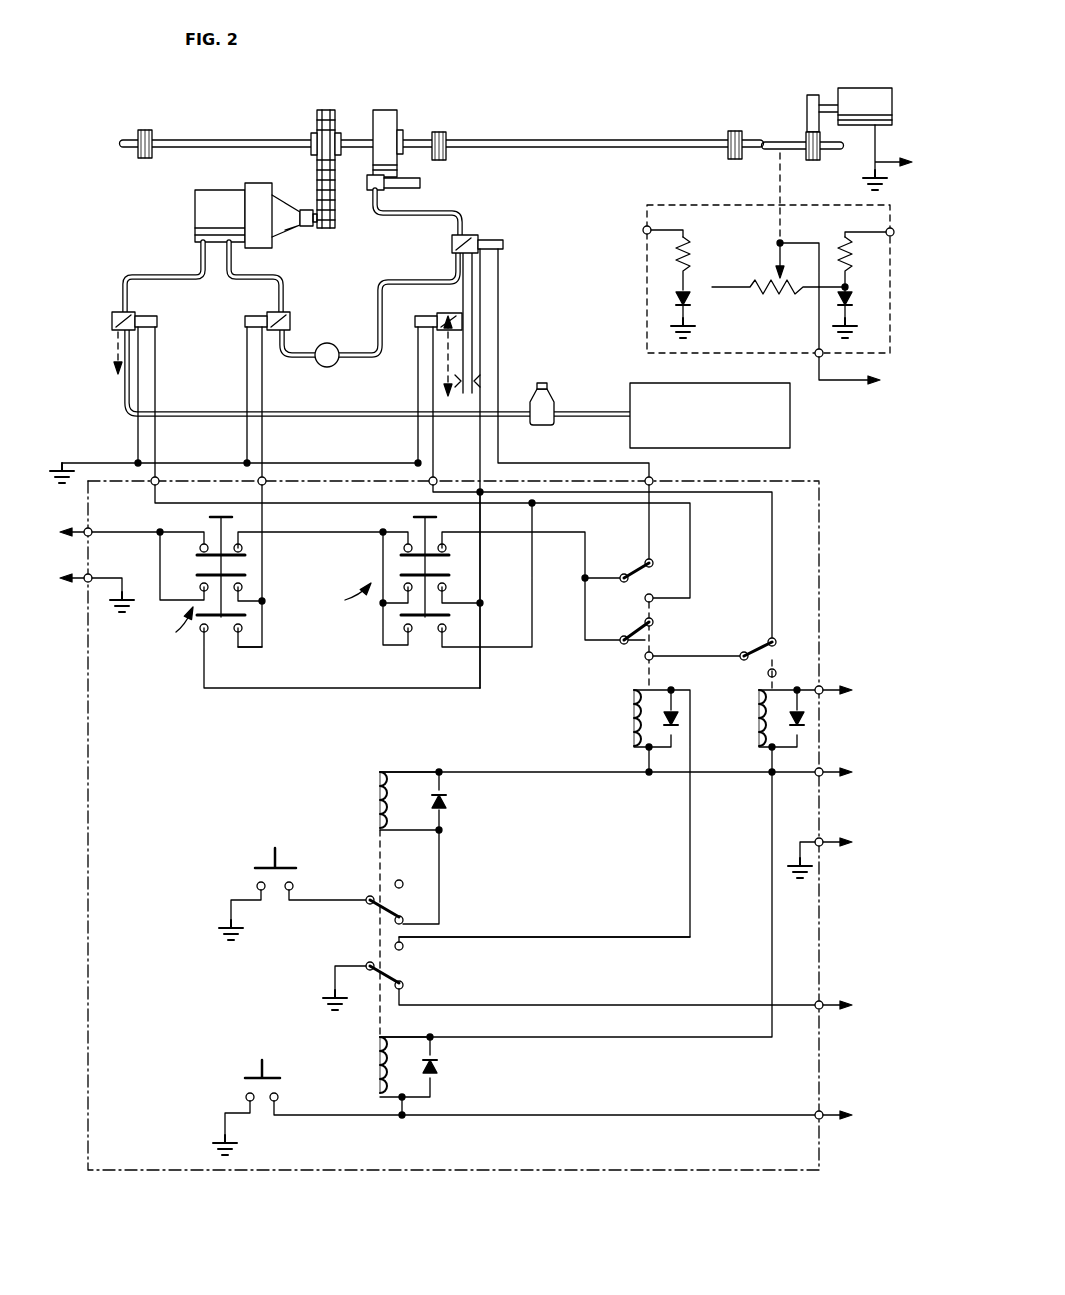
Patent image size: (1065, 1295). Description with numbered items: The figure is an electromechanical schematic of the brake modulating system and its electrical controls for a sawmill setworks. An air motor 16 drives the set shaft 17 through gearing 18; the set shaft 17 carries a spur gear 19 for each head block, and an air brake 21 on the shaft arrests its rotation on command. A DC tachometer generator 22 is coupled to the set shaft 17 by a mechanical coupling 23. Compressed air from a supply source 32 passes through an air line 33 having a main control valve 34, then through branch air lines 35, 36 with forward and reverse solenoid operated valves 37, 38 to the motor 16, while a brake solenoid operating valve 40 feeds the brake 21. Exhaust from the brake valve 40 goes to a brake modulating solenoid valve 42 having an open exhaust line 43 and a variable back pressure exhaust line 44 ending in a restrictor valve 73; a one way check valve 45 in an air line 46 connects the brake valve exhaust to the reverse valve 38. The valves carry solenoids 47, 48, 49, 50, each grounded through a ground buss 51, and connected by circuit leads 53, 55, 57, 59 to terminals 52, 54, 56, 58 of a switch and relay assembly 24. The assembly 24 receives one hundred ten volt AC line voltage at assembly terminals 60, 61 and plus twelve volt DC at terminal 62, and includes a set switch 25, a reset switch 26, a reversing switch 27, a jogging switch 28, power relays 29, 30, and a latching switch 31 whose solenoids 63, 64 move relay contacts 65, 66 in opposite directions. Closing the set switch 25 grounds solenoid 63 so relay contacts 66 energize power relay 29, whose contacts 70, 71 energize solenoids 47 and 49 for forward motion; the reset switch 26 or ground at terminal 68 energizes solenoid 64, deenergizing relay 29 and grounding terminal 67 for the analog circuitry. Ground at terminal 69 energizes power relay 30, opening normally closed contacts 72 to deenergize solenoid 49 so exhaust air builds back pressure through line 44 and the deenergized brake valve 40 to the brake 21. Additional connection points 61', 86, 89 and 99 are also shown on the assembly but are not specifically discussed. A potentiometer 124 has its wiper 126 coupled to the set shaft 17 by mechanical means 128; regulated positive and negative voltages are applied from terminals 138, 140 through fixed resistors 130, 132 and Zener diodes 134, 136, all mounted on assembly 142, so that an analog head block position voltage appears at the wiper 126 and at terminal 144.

The air motor 16 is at (198, 195).
The set shaft 17 is at (567, 138).
The gearing 18 is at (332, 187).
The spur gear 19 is at (735, 160).
The air brake 21 is at (386, 112).
The DC tachometer generator 22 is at (878, 88).
The mechanical coupling 23 is at (806, 118).
The switch and relay assembly 24 is at (532, 1170).
The set switch 25 is at (292, 882).
The reset switch 26 is at (283, 1102).
The reversing switch 27 is at (162, 683).
The jogging switch 28 is at (484, 590).
The power relay 29 is at (611, 681).
The power relay 30 is at (737, 691).
The latching switch 31 is at (499, 971).
The compressed air supply 32 is at (790, 414).
The air line 33 is at (343, 410).
The main control valve 34 is at (550, 392).
The branch air line 35 is at (147, 276).
The branch air line 36 is at (233, 277).
The forward solenoid operated valve 37 is at (112, 312).
The reverse solenoid operated valve 38 is at (284, 312).
The brake solenoid operating valve 40 is at (452, 242).
The brake modulating solenoid valve 42 is at (447, 313).
The open exhaust line 43 is at (444, 350).
The variable back pressure exhaust line 44 is at (473, 345).
The one way check valve 45 is at (318, 365).
The air line 46 is at (380, 282).
The solenoid 47 is at (143, 316).
The solenoid 48 is at (256, 316).
The solenoid 49 is at (415, 322).
The solenoid 50 is at (495, 240).
The ground buss 51 is at (314, 480).
The terminal 52 is at (159, 485).
The circuit lead 53 is at (158, 360).
The terminal 54 is at (265, 485).
The circuit lead 55 is at (264, 430).
The terminal 56 is at (430, 484).
The circuit lead 57 is at (436, 430).
The terminal 58 is at (651, 480).
The circuit lead 59 is at (500, 312).
The assembly terminal 60 is at (91, 529).
The assembly terminal 61 is at (97, 581).
The ground terminal 61' is at (854, 858).
The assembly terminal 62 is at (824, 777).
The solenoid 63 is at (373, 785).
The solenoid 64 is at (372, 1070).
The relay contacts 65 is at (397, 905).
The relay contacts 66 is at (398, 975).
The assembly terminal 67 is at (821, 1010).
The assembly terminal 68 is at (821, 1122).
The assembly terminal 69 is at (824, 688).
The switch contacts 70 is at (645, 583).
The relay contacts 71 is at (645, 637).
The relay contacts 72 is at (761, 663).
The restrictor valve 73 is at (472, 381).
The lead 86 is at (836, 702).
The lead 89 is at (826, 1112).
The lead 99 is at (826, 1000).
The potentiometer 124 is at (779, 297).
The wiper 126 is at (777, 273).
The mechanical means 128 is at (781, 214).
The fixed resistor 130 is at (689, 255).
The fixed resistor 132 is at (853, 262).
The Zener diode 134 is at (690, 298).
The Zener diode 136 is at (853, 305).
The terminal 138 is at (645, 234).
The terminal 140 is at (892, 228).
The assembly 142 is at (645, 332).
The terminal 144 is at (815, 350).